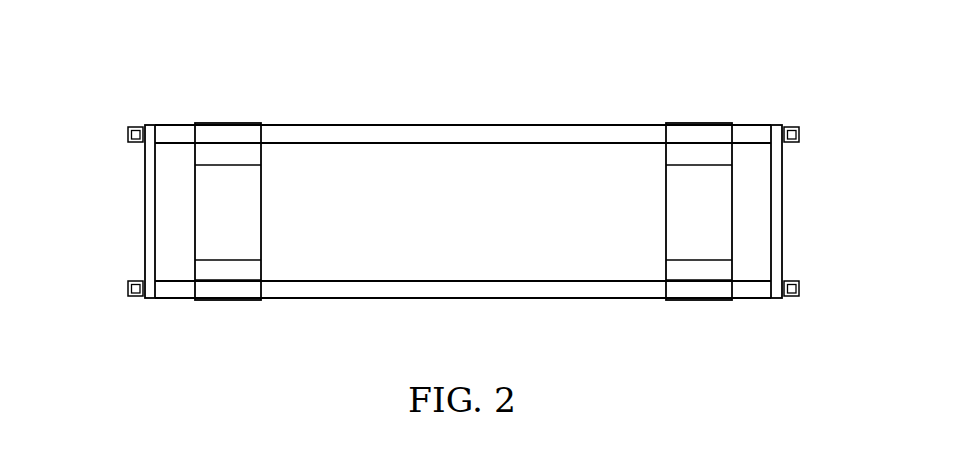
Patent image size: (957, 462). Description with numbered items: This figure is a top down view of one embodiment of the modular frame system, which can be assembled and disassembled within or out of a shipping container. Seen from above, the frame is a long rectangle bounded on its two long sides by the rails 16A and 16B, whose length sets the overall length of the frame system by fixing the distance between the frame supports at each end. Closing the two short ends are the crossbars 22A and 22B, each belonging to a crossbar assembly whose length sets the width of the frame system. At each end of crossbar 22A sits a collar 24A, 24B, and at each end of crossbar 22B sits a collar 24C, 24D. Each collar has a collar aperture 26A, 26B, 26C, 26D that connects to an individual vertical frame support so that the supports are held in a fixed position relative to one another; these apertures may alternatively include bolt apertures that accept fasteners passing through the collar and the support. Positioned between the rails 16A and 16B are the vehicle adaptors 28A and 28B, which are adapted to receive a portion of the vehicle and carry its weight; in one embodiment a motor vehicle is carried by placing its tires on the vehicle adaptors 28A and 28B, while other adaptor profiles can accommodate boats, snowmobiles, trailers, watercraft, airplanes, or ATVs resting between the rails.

The rail 16A is at (463, 125).
The rail 16B is at (463, 299).
The crossbar 22A is at (145, 213).
The crossbar 22B is at (782, 213).
The collar 24A is at (128, 133).
The collar 24B is at (128, 290).
The collar 24C is at (799, 133).
The collar 24D is at (799, 290).
The collar aperture 26A is at (136, 132).
The collar aperture 26B is at (136, 294).
The collar aperture 26C is at (791, 132).
The collar aperture 26D is at (791, 294).
The vehicle adaptor 28A is at (228, 123).
The vehicle adaptor 28B is at (698, 123).